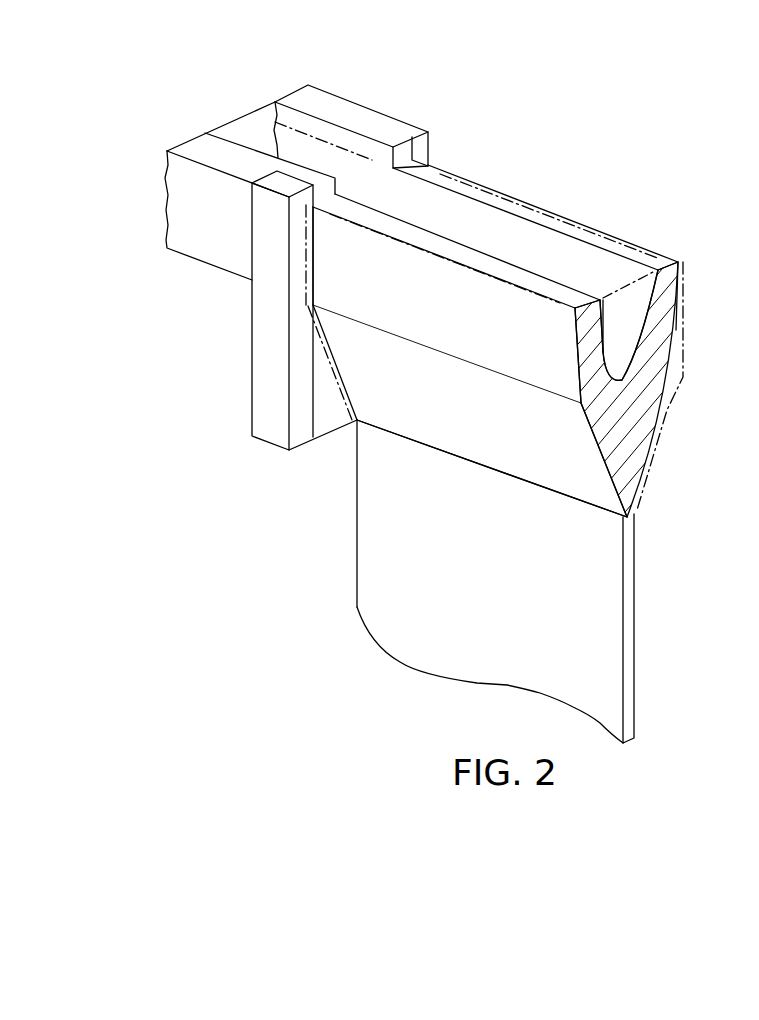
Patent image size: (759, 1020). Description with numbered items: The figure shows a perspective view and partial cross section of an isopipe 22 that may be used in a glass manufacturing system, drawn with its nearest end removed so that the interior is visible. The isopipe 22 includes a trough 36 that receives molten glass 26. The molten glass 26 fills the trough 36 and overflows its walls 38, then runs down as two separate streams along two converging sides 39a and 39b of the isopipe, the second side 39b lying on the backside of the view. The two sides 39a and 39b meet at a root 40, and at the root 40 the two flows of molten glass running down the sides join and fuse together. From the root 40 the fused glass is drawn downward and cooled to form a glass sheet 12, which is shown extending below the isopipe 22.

The glass sheet 12 is at (623, 647).
The isopipe 22 is at (622, 396).
The molten glass 26 is at (520, 253).
The trough 36 is at (617, 347).
The walls 38 is at (660, 296).
The converging side 39a is at (490, 420).
The converging side 39b is at (652, 463).
The root 40 is at (503, 470).